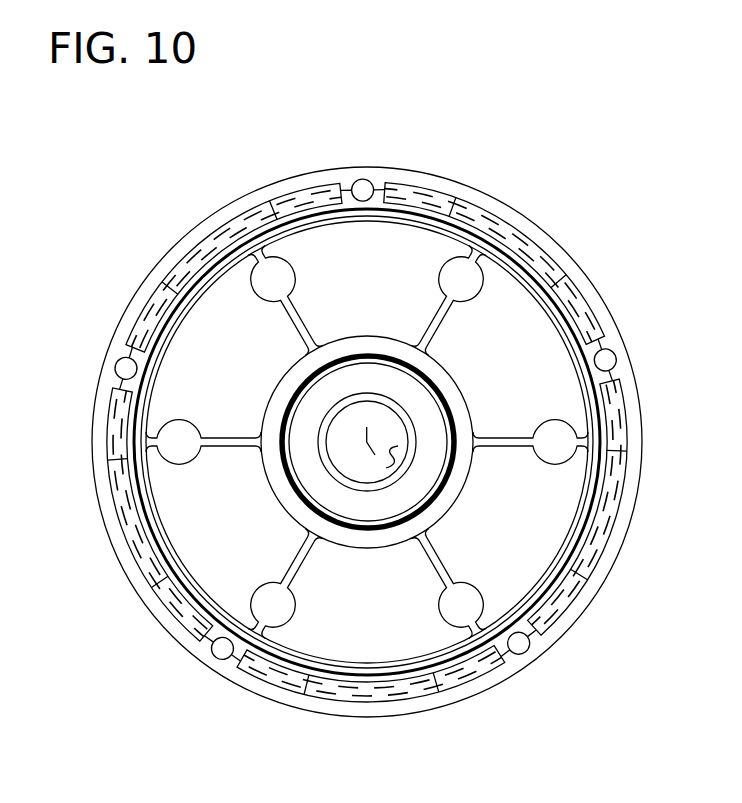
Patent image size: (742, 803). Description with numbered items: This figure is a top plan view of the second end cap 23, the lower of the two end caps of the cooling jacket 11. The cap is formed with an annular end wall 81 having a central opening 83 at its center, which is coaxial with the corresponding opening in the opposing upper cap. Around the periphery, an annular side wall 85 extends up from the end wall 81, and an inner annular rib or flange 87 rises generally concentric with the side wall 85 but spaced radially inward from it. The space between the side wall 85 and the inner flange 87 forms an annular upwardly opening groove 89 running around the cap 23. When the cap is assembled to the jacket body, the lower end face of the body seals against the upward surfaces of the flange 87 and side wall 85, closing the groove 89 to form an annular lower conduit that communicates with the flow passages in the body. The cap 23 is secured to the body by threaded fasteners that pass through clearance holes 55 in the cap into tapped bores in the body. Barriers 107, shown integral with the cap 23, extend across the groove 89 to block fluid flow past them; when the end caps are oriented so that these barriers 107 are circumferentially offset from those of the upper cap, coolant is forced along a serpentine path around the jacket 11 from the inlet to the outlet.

The cooling jacket 11 is at (362, 147).
The second end cap 23 is at (218, 202).
The clearance holes 55 is at (212, 650).
The annular end wall 81 is at (508, 400).
The central opening 83 is at (393, 456).
The annular side wall 85 is at (583, 290).
The inner annular rib or flange 87 is at (508, 255).
The annular upwardly opening groove 89 is at (463, 210).
The barriers 107 is at (126, 348).